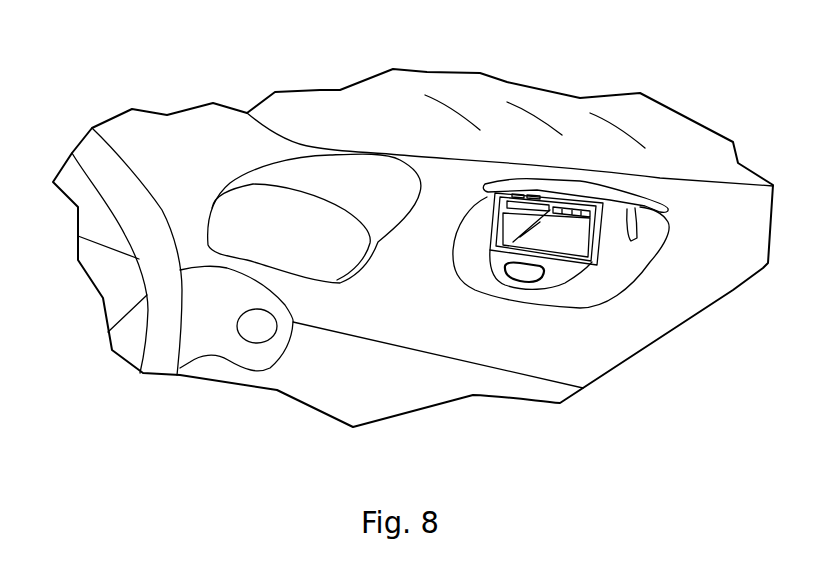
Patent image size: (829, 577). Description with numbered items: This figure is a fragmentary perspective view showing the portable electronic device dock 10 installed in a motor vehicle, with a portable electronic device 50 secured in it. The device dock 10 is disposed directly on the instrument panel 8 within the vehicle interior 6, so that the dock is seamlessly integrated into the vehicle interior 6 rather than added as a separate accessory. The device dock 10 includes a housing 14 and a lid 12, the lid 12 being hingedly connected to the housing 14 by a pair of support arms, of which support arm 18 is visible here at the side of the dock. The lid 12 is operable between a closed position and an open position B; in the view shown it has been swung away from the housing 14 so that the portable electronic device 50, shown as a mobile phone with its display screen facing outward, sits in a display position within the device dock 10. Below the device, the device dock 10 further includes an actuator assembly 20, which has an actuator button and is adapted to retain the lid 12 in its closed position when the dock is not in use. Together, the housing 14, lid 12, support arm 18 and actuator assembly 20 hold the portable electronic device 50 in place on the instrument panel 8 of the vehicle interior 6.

The vehicle interior 6 is at (352, 372).
The instrument panel 8 is at (510, 337).
The portable electronic device dock 10 is at (645, 191).
The lid 12 is at (568, 184).
The housing 14 is at (625, 272).
The support arm 18 is at (640, 218).
The actuator assembly 20 is at (528, 275).
The portable electronic device 50 is at (488, 210).
The open position B is at (657, 203).